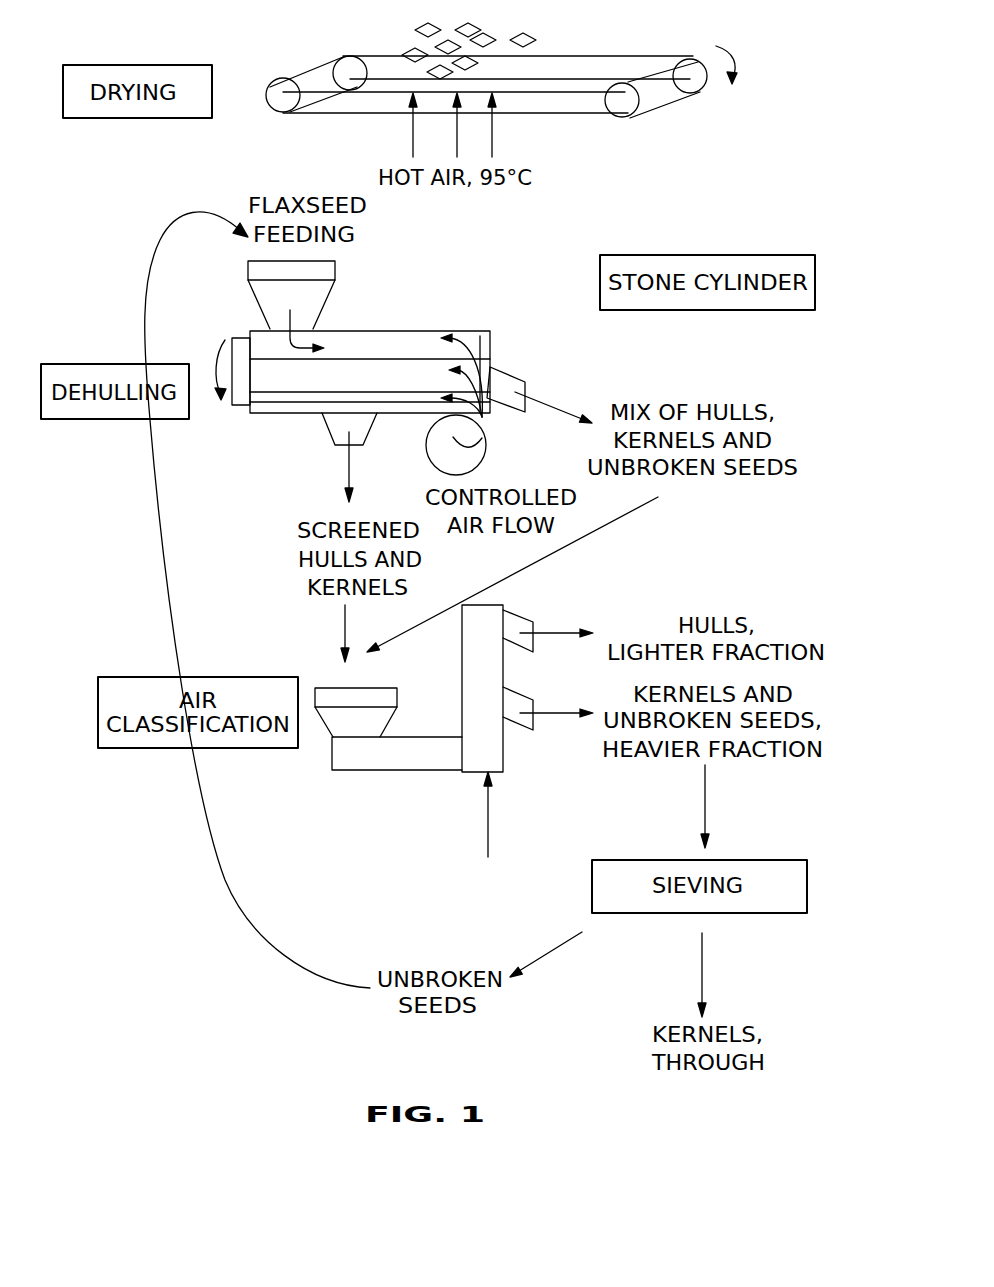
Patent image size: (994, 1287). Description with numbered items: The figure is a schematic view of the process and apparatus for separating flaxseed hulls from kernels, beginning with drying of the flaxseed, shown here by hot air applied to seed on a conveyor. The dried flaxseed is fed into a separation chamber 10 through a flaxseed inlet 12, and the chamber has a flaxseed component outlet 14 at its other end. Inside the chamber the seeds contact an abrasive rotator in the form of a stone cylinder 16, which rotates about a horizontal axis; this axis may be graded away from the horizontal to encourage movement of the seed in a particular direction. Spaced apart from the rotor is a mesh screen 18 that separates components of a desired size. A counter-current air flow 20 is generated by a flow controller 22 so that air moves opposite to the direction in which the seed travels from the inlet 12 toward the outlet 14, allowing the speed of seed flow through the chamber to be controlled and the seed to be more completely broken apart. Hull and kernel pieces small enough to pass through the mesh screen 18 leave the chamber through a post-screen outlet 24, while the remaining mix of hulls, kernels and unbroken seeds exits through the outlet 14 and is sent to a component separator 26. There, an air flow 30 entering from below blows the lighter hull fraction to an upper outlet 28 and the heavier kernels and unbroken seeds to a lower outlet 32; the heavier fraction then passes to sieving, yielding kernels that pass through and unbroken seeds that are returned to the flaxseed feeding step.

The separation chamber 10 is at (403, 367).
The flaxseed inlet 12 is at (335, 263).
The flaxseed component outlet 14 is at (517, 372).
The stone cylinder 16 is at (362, 367).
The mesh screen 18 is at (283, 398).
The air flow or counter-current 20 is at (482, 334).
The flow controller 22 is at (485, 457).
The post-screen outlet 24 is at (363, 447).
The component separator 26 is at (385, 805).
The upper outlet 28 is at (522, 614).
The air flow 30 is at (487, 840).
The lower outlet 32 is at (522, 692).